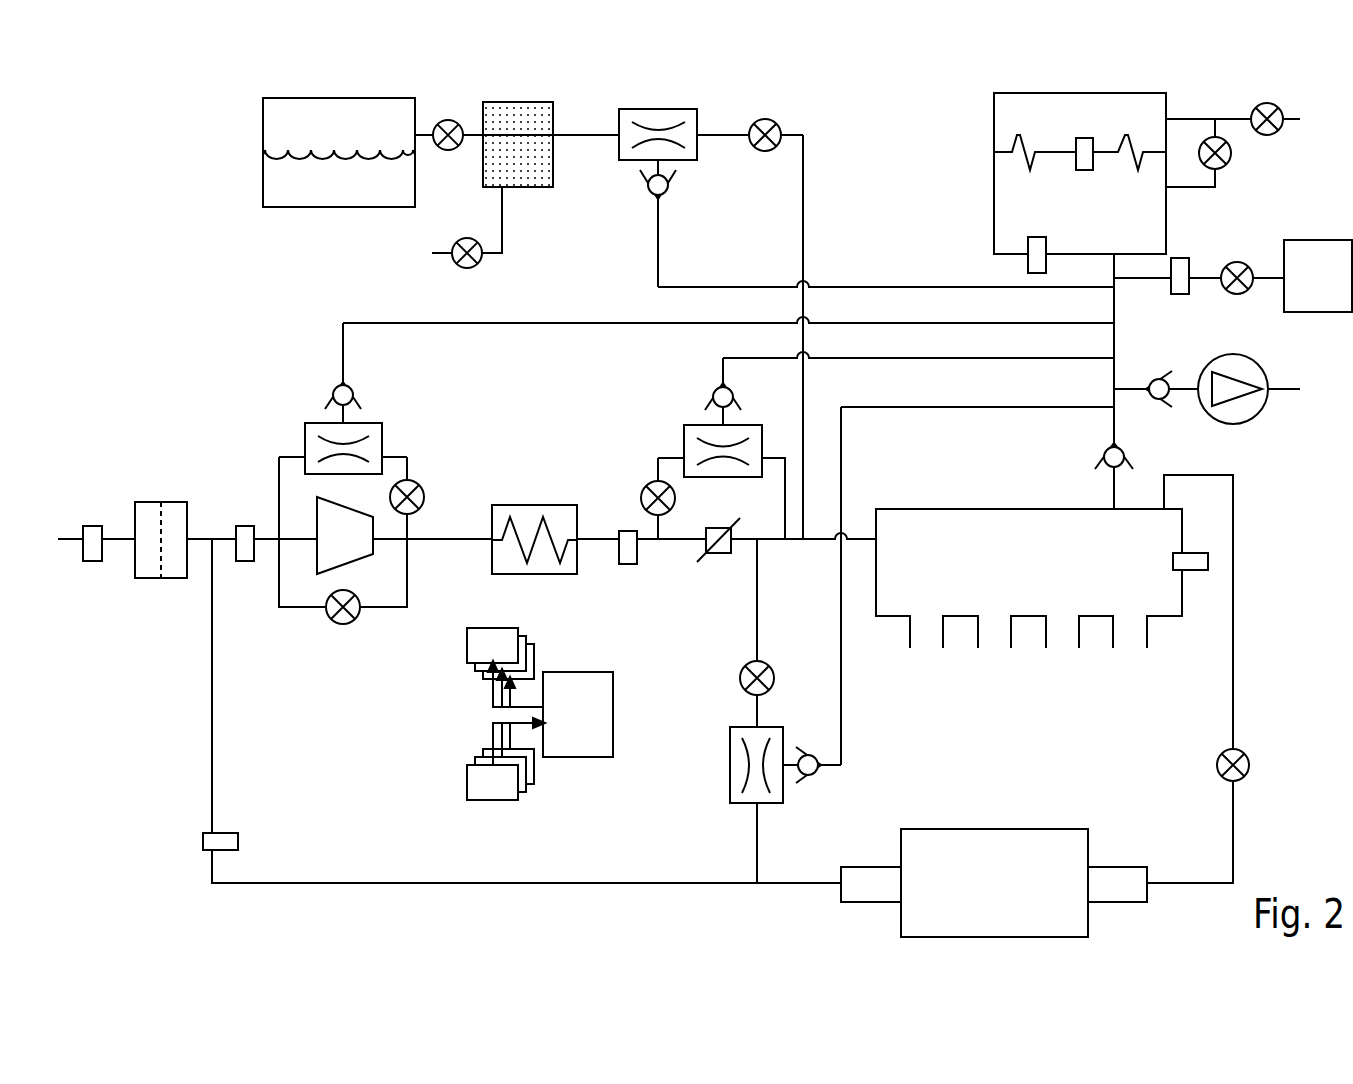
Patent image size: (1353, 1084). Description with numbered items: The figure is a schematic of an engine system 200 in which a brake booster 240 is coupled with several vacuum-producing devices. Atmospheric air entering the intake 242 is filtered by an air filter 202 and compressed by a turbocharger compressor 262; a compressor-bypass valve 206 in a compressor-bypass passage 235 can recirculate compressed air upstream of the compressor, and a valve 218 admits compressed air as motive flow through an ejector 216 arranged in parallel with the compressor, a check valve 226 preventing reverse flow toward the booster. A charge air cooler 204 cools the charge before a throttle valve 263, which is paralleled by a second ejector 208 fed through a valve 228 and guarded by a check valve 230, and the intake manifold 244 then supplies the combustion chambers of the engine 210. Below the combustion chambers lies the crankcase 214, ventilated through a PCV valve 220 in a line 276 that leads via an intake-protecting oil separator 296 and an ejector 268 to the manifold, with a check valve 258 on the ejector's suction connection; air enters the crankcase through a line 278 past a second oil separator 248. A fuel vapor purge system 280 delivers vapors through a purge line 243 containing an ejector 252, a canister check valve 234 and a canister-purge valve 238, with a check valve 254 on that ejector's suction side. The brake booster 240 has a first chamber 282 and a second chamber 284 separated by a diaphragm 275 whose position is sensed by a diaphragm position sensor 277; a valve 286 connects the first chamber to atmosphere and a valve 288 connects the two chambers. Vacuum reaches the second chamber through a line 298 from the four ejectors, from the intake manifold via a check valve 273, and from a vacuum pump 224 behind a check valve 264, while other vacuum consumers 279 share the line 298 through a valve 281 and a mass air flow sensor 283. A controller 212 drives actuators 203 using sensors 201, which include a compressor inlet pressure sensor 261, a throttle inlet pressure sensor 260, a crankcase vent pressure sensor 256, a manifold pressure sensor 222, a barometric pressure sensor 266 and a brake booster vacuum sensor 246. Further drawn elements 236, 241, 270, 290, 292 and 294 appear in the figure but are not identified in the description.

The engine system 200 is at (159, 230).
The sensors 201 is at (476, 796).
The air filter 202 is at (161, 502).
The actuators 203 is at (476, 659).
The charge air cooler 204 is at (531, 505).
The compressor-bypass valve 206 is at (343, 624).
The ejector 208 is at (684, 440).
The engine 210 is at (1029, 539).
The controller 212 is at (562, 727).
The crankcase 214 is at (979, 898).
The ejector 216 is at (384, 428).
The valve 218 is at (422, 492).
The PCV valve 220 is at (1247, 760).
The intake manifold air pressure sensor 222 is at (1188, 553).
The vacuum pump 224 is at (1255, 412).
The check valve 226 is at (332, 390).
The valve 228 is at (641, 495).
The check valve 230 is at (710, 392).
The canister check valve 234 is at (324, 136).
The compressor-bypass passage 235 is at (295, 608).
The fuel vapor canister 236 is at (500, 102).
The canister-purge valve 238 is at (765, 119).
The brake booster 240 is at (1048, 173).
The vent line 241 is at (502, 222).
The intake 242 is at (80, 538).
The purge line 243 is at (803, 165).
The intake manifold 244 is at (1012, 574).
The brake booster vacuum sensor 246 is at (1046, 262).
The second oil separator 248 is at (855, 898).
The ejector 252 is at (697, 120).
The check valve 254 is at (645, 188).
The crankcase vent pressure sensor 256 is at (238, 841).
The check valve 258 is at (812, 787).
The throttle inlet pressure sensor 260 is at (625, 565).
The compressor inlet pressure sensor 261 is at (240, 561).
The turbocharger compressor 262 is at (327, 549).
The throttle valve 263 is at (720, 553).
The check valve 264 is at (1163, 402).
The barometric pressure sensor 266 is at (92, 561).
The ejector 268 is at (730, 752).
The valve 270 is at (775, 673).
The check valve 273 is at (1105, 455).
The diaphragm 275 is at (1060, 152).
The line 276 is at (1233, 712).
The diaphragm position sensor 277 is at (1093, 160).
The line 278 is at (365, 882).
The other vacuum consumers 279 is at (1302, 291).
The fuel vapor purge system 280 is at (448, 150).
The valve 281 is at (1237, 295).
The first chamber 282 is at (1064, 132).
The mass air flow sensor 283 is at (1180, 294).
The second chamber 284 is at (1019, 211).
The valve 286 is at (1267, 137).
The valve 288 is at (1227, 165).
The fresh air line 290 is at (1234, 119).
The passage 292 is at (1188, 187).
The canister vent valve 294 is at (468, 268).
The intake-protecting oil separator 296 is at (1102, 898).
The line 298 is at (1116, 342).